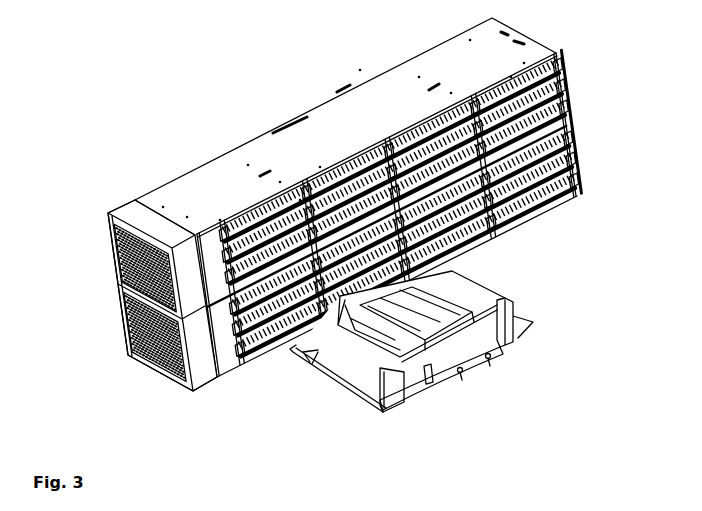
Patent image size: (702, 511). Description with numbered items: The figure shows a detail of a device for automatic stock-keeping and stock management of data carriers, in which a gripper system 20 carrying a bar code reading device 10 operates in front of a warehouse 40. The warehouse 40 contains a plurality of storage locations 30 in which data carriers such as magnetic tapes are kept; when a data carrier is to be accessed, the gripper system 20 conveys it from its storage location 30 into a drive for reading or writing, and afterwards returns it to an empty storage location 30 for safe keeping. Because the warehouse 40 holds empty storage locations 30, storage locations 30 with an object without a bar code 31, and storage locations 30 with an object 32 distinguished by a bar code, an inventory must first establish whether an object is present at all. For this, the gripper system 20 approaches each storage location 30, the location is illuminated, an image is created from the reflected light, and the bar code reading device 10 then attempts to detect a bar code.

The bar code reading device 10 is at (516, 340).
The gripper system 20 is at (474, 261).
The storage location 30 is at (372, 213).
The object without a bar code 31 is at (357, 157).
The object distinguished by a bar code 32 is at (247, 213).
The warehouse 40 is at (123, 177).